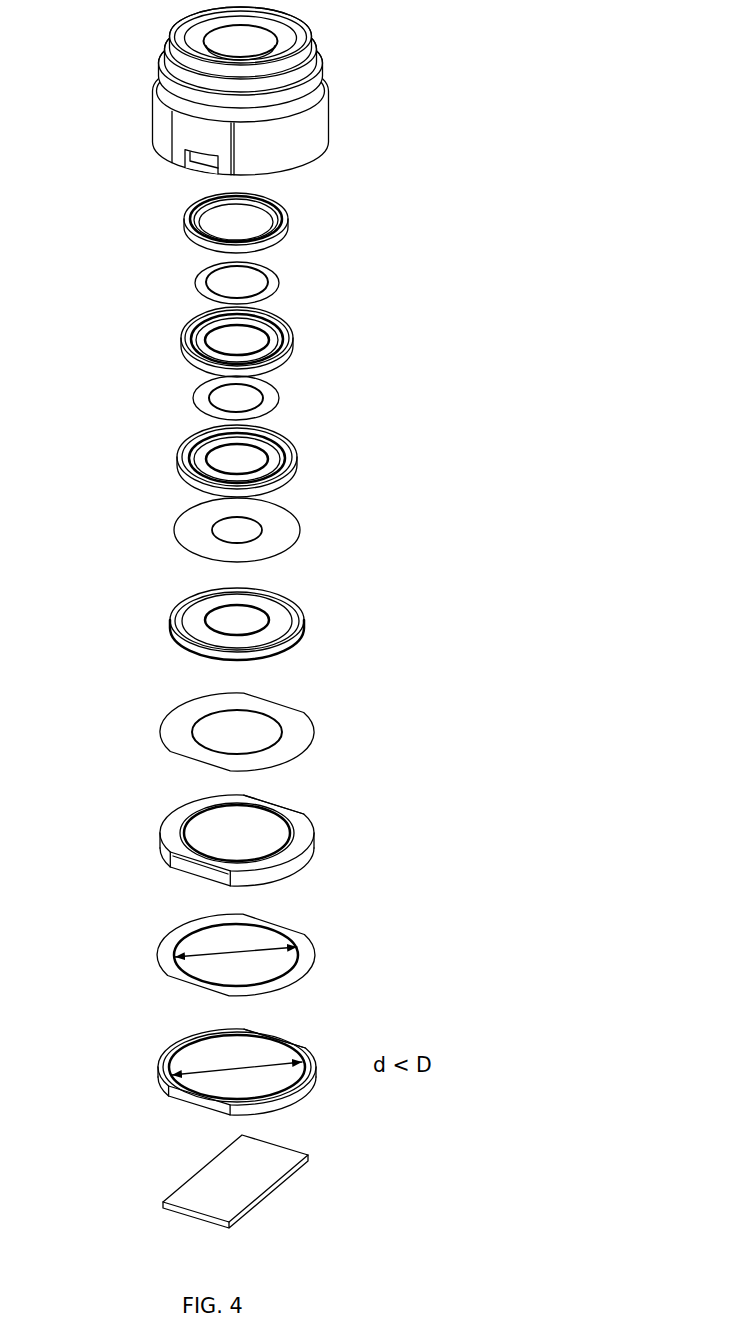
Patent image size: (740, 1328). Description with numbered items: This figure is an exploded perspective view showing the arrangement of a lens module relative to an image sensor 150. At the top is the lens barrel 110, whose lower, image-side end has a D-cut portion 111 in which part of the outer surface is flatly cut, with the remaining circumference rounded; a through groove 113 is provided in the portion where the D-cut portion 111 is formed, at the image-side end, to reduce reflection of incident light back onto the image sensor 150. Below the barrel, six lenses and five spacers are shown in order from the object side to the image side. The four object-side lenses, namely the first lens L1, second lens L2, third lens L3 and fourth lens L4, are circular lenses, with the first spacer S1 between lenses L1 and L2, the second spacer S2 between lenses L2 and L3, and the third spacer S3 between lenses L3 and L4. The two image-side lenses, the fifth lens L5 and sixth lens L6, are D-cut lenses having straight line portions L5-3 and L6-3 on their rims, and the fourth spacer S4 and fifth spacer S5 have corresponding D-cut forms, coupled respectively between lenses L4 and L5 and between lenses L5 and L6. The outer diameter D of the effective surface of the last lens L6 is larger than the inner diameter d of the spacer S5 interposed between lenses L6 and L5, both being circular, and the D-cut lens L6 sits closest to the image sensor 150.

The lens barrel 110 is at (237, 95).
The D-cut portion 111 is at (193, 120).
The through groove 113 is at (201, 159).
The first lens L1 is at (212, 215).
The first spacer S1 is at (203, 282).
The second lens L2 is at (202, 334).
The second spacer S2 is at (204, 394).
The third lens L3 is at (204, 452).
The third spacer S3 is at (210, 525).
The fourth lens L4 is at (190, 617).
The fourth spacer S4 is at (181, 718).
The fifth lens L5 is at (223, 831).
The straight line portion L5-3 is at (272, 806).
The fifth spacer S5 is at (227, 955).
The sixth lens L6 is at (225, 1079).
The straight line portion L6-3 is at (268, 1039).
The inner diameter of spacer d is at (235, 952).
The outer diameter of effective surface D is at (247, 1068).
The image sensor 150 is at (209, 1177).